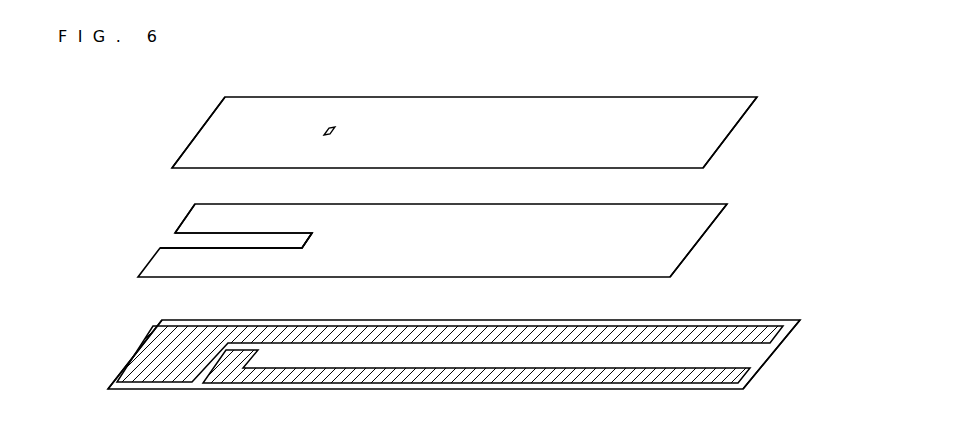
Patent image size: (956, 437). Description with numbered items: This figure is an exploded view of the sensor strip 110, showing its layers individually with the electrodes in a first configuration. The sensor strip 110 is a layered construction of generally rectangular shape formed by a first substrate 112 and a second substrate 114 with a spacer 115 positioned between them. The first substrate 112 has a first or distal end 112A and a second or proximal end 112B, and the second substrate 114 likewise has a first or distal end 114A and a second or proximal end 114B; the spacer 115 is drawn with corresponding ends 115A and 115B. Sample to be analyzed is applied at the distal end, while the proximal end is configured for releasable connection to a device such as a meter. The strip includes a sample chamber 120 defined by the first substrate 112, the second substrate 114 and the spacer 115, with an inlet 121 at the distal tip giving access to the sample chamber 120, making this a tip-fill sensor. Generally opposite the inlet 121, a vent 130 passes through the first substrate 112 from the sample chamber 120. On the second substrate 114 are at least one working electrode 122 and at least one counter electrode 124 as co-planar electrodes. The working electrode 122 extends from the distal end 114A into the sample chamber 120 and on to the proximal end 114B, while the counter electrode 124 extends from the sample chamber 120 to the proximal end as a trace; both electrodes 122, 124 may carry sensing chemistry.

The sensor strip 110 is at (148, 179).
The first substrate 112 is at (547, 97).
The first or distal end of substrate 112 112A is at (197, 132).
The second or proximal end of substrate 112 112B is at (731, 132).
The vent 130 is at (334, 129).
The spacer 115 is at (690, 205).
The first end of spacer 115A is at (183, 220).
The second end of spacer 115B is at (700, 240).
The sample chamber 120 is at (232, 248).
The inlet 121 is at (170, 241).
The second substrate 114 is at (688, 308).
The first or distal end of substrate 114 114A is at (137, 353).
The second or proximal end of substrate 114 114B is at (772, 355).
The working electrode 122 is at (153, 380).
The counter electrode 124 is at (247, 362).